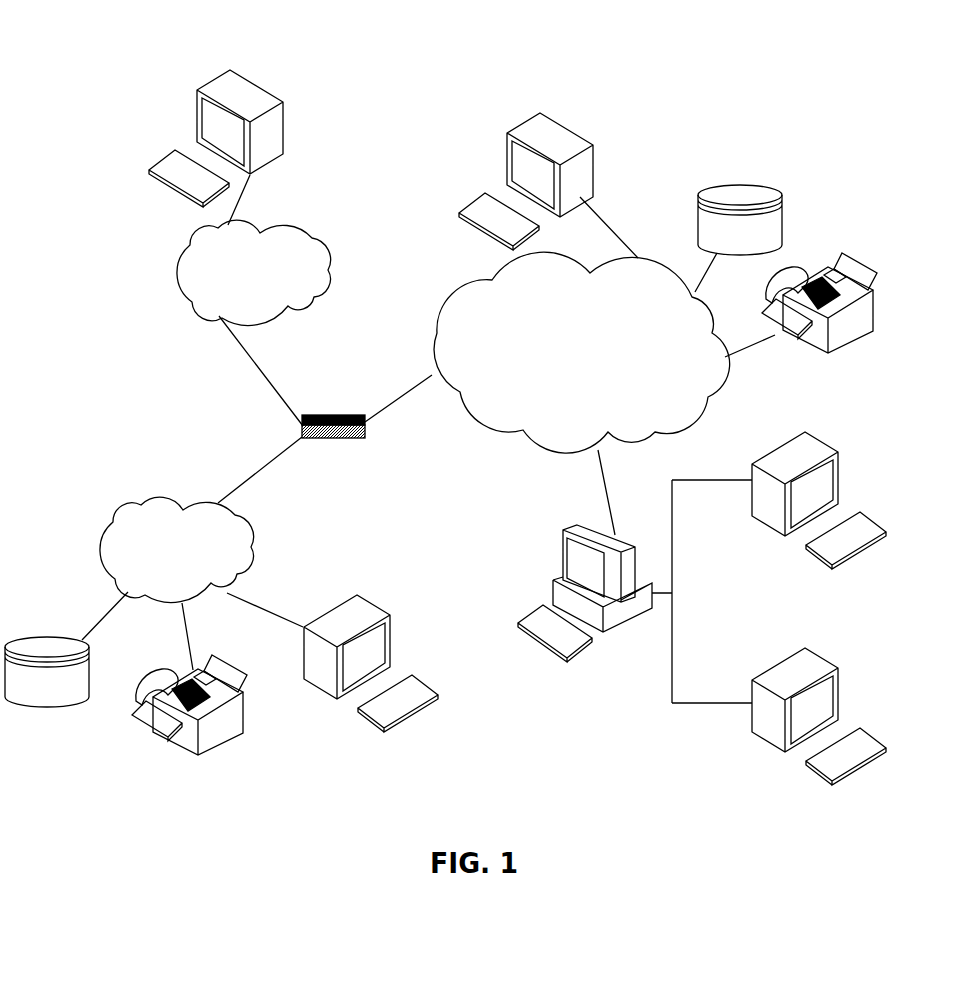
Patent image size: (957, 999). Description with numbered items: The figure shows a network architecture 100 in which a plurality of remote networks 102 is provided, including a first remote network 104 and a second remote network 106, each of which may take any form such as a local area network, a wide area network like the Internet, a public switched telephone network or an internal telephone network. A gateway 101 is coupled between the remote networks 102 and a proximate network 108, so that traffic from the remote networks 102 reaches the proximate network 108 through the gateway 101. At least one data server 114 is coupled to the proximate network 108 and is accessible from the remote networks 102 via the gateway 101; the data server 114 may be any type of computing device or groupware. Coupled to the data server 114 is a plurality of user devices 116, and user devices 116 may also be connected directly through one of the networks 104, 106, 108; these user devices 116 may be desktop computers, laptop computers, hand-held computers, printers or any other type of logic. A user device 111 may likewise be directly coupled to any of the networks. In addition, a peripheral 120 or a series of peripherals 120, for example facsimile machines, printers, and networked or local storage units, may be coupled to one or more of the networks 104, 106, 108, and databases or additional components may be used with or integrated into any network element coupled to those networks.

The architecture 100 is at (122, 50).
The gateway 101 is at (312, 415).
The remote networks 102 is at (152, 334).
The first remote network 104 is at (107, 524).
The second remote network 106 is at (325, 243).
The proximate network 108 is at (687, 415).
The user device 111 is at (593, 145).
The data server 114 is at (563, 546).
The user devices 116 is at (284, 112).
The peripheral 120 is at (782, 196).